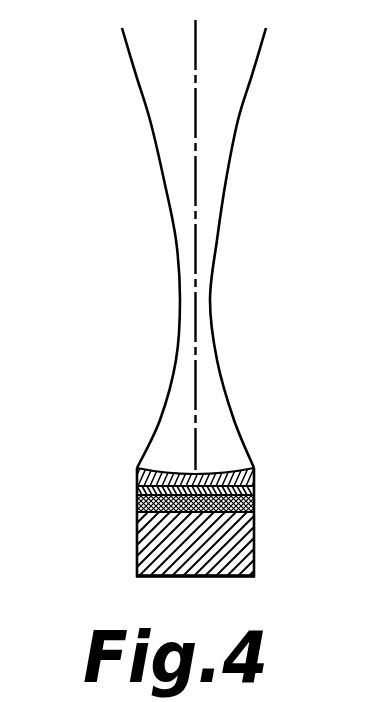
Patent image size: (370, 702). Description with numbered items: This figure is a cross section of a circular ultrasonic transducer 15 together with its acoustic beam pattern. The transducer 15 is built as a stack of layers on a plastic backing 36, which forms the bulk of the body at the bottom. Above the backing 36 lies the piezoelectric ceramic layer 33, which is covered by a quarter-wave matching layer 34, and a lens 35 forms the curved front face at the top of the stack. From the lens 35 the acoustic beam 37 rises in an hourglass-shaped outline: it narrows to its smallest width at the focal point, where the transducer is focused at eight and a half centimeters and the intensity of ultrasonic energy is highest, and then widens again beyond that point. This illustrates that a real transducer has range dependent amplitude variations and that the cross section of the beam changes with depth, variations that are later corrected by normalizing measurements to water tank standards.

The transducer 15 is at (122, 549).
The piezoelectric ceramic layer 33 is at (255, 507).
The quarter-wave matching layer 34 is at (255, 490).
The lens 35 is at (255, 478).
The plastic backing 36 is at (255, 550).
The hourglass-shaped tube 37 is at (220, 222).